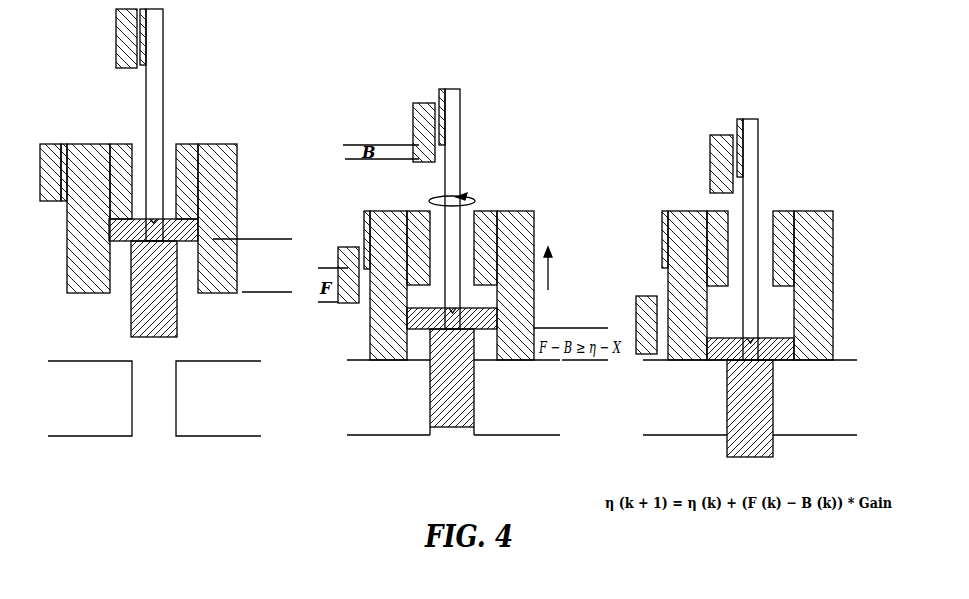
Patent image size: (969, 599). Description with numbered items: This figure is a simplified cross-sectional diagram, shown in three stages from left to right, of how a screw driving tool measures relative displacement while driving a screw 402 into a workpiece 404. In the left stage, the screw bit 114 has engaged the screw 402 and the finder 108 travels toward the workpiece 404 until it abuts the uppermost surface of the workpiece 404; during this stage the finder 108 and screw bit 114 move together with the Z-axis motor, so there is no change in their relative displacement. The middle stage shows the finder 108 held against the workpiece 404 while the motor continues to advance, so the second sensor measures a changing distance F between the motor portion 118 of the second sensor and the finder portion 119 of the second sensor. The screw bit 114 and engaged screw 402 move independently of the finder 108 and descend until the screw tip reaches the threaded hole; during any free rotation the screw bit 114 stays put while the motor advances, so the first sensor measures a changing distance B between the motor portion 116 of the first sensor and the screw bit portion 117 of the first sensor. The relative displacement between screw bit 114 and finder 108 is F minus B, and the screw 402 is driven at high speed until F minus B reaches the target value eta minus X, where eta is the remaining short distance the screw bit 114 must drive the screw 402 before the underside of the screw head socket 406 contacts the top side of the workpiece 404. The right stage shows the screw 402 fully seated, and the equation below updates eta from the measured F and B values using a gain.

The finder 108 is at (100, 143).
The screw bit 114 is at (163, 130).
The motor portion of the first sensor 116 is at (117, 60).
The screw bit portion of the first sensor 117 is at (143, 68).
The motor portion of the second sensor 118 is at (52, 143).
The finder portion of the second sensor 119 is at (66, 204).
The screw 402 is at (178, 318).
The workpiece 404 is at (224, 437).
The screw head socket 406 is at (186, 242).